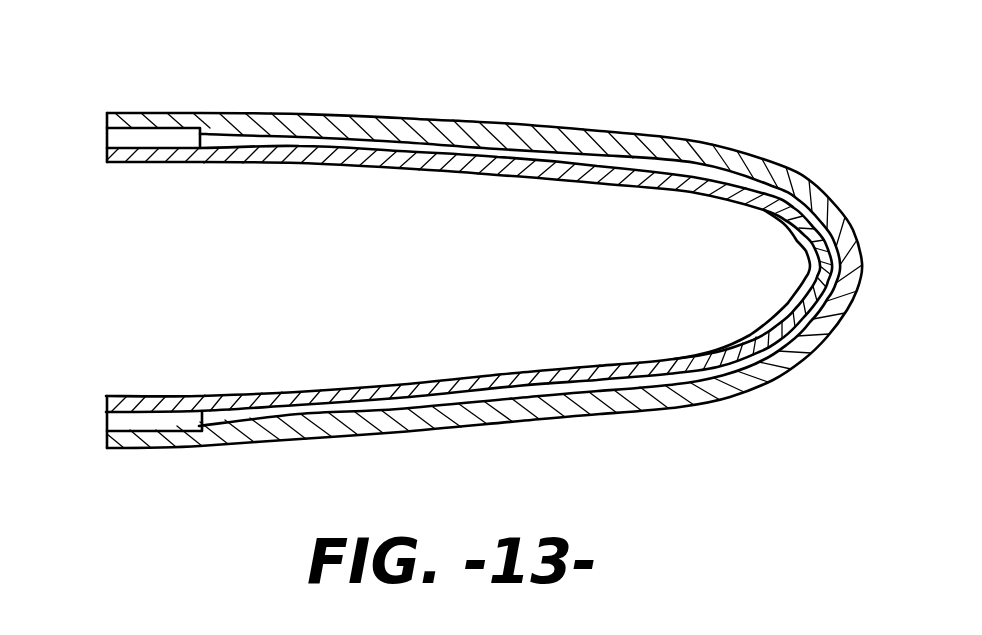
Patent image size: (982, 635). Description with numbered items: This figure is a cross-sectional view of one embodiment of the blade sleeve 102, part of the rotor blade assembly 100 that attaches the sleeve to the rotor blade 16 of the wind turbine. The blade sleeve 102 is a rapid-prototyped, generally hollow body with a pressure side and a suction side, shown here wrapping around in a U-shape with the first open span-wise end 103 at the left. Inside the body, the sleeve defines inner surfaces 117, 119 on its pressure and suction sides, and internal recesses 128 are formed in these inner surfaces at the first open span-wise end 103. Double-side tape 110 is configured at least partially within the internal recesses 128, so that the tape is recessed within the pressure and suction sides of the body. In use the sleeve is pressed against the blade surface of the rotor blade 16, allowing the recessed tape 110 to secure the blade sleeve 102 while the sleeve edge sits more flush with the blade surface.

The rotor blade assembly 100 is at (774, 100).
The blade sleeve 102 is at (615, 130).
The first open span-wise end 103 is at (160, 280).
The double-side tape 110 is at (120, 138).
The inner surface 117 is at (500, 150).
The inner surface 119 is at (532, 413).
The rotor blade 16 is at (305, 140).
The internal recesses 128 is at (155, 128).